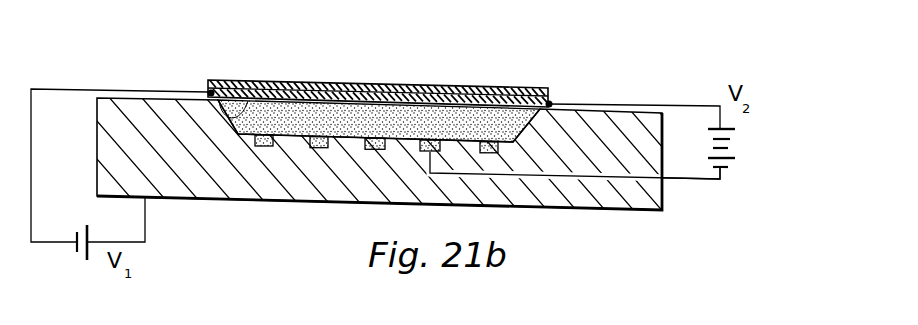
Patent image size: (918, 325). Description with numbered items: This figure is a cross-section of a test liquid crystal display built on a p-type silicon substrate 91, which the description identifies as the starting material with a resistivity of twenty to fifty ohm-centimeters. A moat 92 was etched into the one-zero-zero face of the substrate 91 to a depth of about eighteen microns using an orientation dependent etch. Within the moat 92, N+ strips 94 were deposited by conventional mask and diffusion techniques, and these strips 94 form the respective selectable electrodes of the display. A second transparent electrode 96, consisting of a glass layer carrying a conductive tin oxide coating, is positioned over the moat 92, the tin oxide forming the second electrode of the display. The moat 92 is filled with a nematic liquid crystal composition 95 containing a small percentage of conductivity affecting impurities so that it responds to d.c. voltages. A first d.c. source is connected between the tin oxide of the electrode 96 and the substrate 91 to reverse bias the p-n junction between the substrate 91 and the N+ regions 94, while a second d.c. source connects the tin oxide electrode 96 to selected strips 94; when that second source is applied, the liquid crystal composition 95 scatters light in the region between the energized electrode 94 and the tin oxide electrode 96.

The substrate 91 is at (236, 172).
The moat 92 is at (227, 116).
The N+ strips 94 is at (265, 147).
The liquid crystal composition 95 is at (363, 112).
The second transparent electrode 96 is at (551, 95).